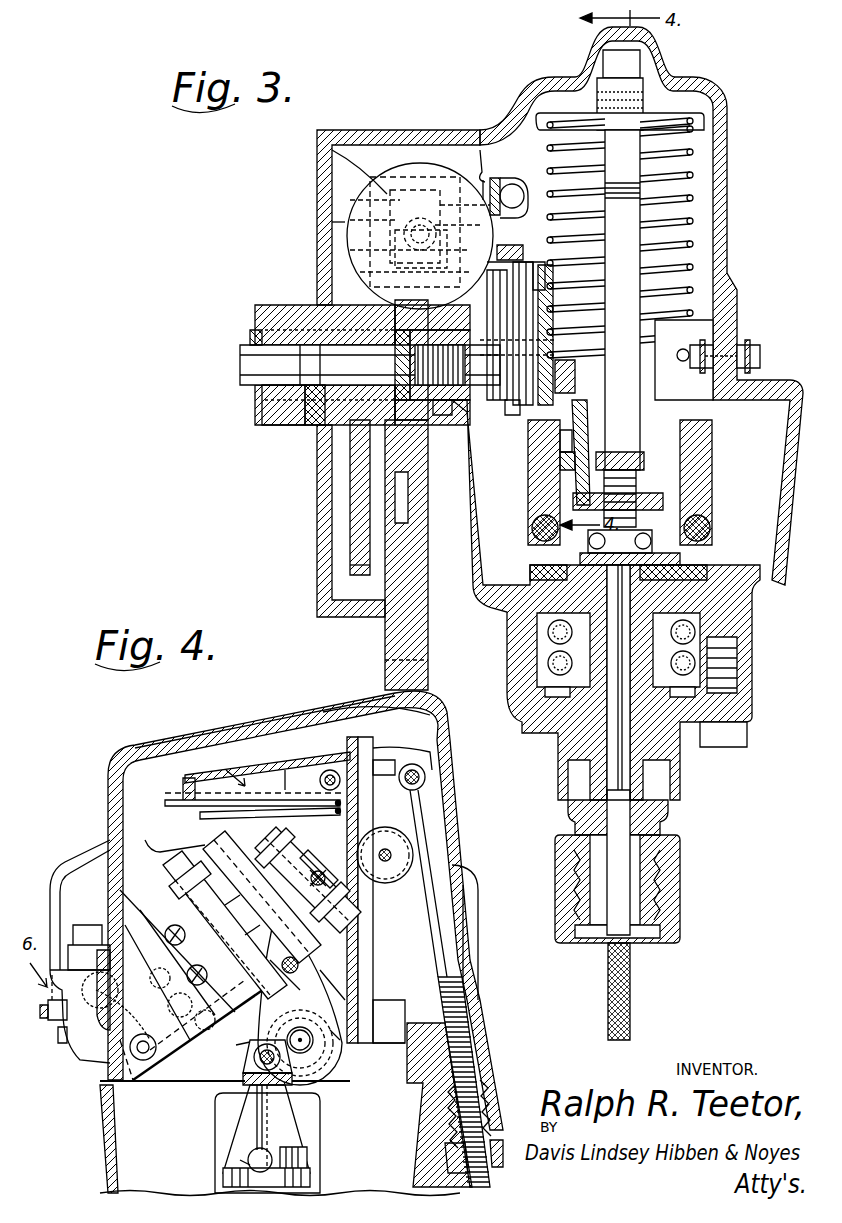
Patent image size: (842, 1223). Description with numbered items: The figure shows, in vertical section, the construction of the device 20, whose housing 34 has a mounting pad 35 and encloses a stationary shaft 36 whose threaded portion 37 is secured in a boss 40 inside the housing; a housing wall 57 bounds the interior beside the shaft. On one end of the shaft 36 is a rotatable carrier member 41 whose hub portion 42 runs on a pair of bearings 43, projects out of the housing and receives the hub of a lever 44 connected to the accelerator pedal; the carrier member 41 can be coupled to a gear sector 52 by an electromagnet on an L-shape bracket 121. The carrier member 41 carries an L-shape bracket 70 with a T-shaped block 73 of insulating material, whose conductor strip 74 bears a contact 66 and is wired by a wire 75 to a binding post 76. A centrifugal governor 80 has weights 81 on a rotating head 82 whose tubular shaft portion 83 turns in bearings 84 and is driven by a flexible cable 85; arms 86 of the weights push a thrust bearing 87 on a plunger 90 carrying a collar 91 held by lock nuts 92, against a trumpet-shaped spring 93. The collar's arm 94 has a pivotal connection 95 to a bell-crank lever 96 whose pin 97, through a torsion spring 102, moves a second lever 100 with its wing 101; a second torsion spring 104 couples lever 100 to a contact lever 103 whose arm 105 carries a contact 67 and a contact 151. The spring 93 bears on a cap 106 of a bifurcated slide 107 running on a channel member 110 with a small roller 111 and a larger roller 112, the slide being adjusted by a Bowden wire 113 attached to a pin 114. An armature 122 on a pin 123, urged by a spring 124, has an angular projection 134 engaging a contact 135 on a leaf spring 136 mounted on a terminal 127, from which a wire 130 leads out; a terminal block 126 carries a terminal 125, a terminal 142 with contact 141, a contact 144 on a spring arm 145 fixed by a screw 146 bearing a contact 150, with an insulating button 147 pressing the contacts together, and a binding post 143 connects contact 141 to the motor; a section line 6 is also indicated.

In FIG. 4, the section line 6 is at (231, 768).
In FIG. 3, the device 20 is at (743, 178).
In FIG. 4, the device 20 is at (119, 740).
In FIG. 4, the housing 34 is at (242, 720).
In FIG. 3, the mounting pad 35 is at (385, 662).
In FIG. 3, the stationary shaft 36 is at (243, 368).
In FIG. 4, the stationary shaft 36 is at (312, 1045).
In FIG. 3, the threaded portion 37 is at (405, 425).
In FIG. 3, the boss 40 is at (462, 330).
In FIG. 3, the rotatable carrier member 41 is at (332, 222).
In FIG. 3, the hub portion 42 is at (270, 428).
In FIG. 3, the bearings 43 is at (258, 420).
In FIG. 3, the lever 44 is at (283, 305).
In FIG. 3, the gear sector 52 is at (360, 490).
In FIG. 3, the housing wall 57 is at (318, 188).
In FIG. 3, the contact 66 is at (512, 190).
In FIG. 4, the contact 66 is at (310, 852).
In FIG. 4, the contact 67 is at (285, 850).
In FIG. 3, the L-shape bracket 70 is at (405, 165).
In FIG. 4, the T-shaped block 73 is at (322, 775).
In FIG. 3, the conductor strip 74 is at (495, 178).
In FIG. 4, the conductor strip 74 is at (295, 790).
In FIG. 4, the wire 75 is at (320, 935).
In FIG. 4, the insulated binding post 76 is at (62, 1043).
In FIG. 3, the centrifugal governor 80 is at (728, 447).
In FIG. 4, the centrifugal governor 80 is at (330, 1165).
In FIG. 3, the centrifugal weights 81 is at (712, 466).
In FIG. 4, the centrifugal weights 81 is at (312, 1118).
In FIG. 3, the rotating head 82 is at (656, 548).
In FIG. 3, the tubular shaft portion 83 is at (640, 772).
In FIG. 3, the bearings 84 is at (755, 620).
In FIG. 3, the flexible cable 85 is at (632, 995).
In FIG. 3, the arms 86 is at (705, 530).
In FIG. 3, the thrust bearing 87 is at (545, 530).
In FIG. 3, the plunger 90 is at (622, 752).
In FIG. 4, the plunger 90 is at (250, 1150).
In FIG. 3, the collar 91 is at (663, 500).
In FIG. 4, the collar 91 is at (312, 1177).
In FIG. 3, the lock nuts 92 is at (602, 515).
In FIG. 4, the lock nuts 92 is at (232, 1175).
In FIG. 3, the trumpet-shaped spring 93 is at (668, 252).
In FIG. 4, the trumpet-shaped spring 93 is at (302, 1147).
In FIG. 3, the arm 94 is at (562, 455).
In FIG. 4, the arm 94 is at (252, 1115).
In FIG. 3, the pivotal connection 95 is at (578, 378).
In FIG. 4, the pivotal connection 95 is at (290, 1095).
In FIG. 3, the bell-crank lever 96 is at (553, 318).
In FIG. 4, the bell-crank lever 96 is at (332, 1040).
In FIG. 3, the pin 97 is at (548, 280).
In FIG. 4, the pin 97 is at (340, 1030).
In FIG. 3, the second lever 100 is at (540, 262).
In FIG. 3, the wing 101 is at (530, 266).
In FIG. 4, the wing 101 is at (262, 1044).
In FIG. 3, the torsion spring 102 is at (572, 432).
In FIG. 3, the contact lever 103 is at (487, 406).
In FIG. 4, the contact lever 103 is at (330, 950).
In FIG. 3, the second torsion spring 104 is at (512, 415).
In FIG. 3, the arm 105 is at (508, 246).
In FIG. 4, the arm 105 is at (200, 778).
In FIG. 3, the cap 106 is at (563, 112).
In FIG. 4, the cap 106 is at (180, 790).
In FIG. 3, the bifurcated slide 107 is at (630, 112).
In FIG. 4, the bifurcated slide 107 is at (395, 760).
In FIG. 3, the channel member 110 is at (640, 222).
In FIG. 4, the channel member 110 is at (373, 742).
In FIG. 4, the small roller 111 is at (325, 712).
In FIG. 4, the larger roller 112 is at (395, 835).
In FIG. 4, the Bowden wire 113 is at (455, 925).
In FIG. 4, the pin 114 is at (424, 774).
In FIG. 4, the L-shape bracket 121 is at (137, 1075).
In FIG. 3, the armature 122 is at (338, 155).
In FIG. 4, the armature 122 is at (170, 1000).
In FIG. 3, the pin 123 is at (404, 240).
In FIG. 4, the pin 123 is at (320, 870).
In FIG. 3, the spring 124 is at (395, 266).
In FIG. 4, the terminal 125 is at (110, 925).
In FIG. 4, the terminal block 126 is at (150, 960).
In FIG. 4, the terminal 127 is at (152, 1062).
In FIG. 4, the wire 130 is at (112, 1032).
In FIG. 3, the angular projection 134 is at (480, 178).
In FIG. 4, the angular projection 134 is at (260, 775).
In FIG. 4, the contact 135 is at (205, 845).
In FIG. 4, the leaf spring 136 is at (283, 966).
In FIG. 4, the contact 141 is at (243, 1070).
In FIG. 4, the terminal 142 is at (48, 1003).
In FIG. 3, the insulated binding post 143 is at (752, 350).
In FIG. 4, the contact 144 is at (250, 1055).
In FIG. 4, the spring arm 145 is at (178, 875).
In FIG. 4, the screw 146 is at (205, 880).
In FIG. 4, the insulating button 147 is at (340, 912).
In FIG. 4, the contact 150 is at (200, 815).
In FIG. 4, the contact 151 is at (178, 800).